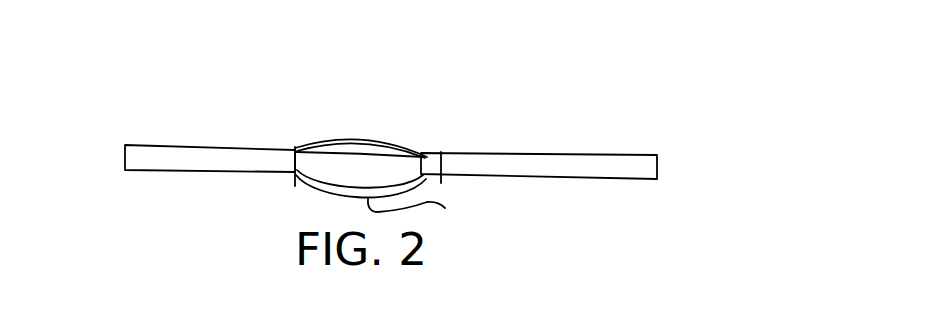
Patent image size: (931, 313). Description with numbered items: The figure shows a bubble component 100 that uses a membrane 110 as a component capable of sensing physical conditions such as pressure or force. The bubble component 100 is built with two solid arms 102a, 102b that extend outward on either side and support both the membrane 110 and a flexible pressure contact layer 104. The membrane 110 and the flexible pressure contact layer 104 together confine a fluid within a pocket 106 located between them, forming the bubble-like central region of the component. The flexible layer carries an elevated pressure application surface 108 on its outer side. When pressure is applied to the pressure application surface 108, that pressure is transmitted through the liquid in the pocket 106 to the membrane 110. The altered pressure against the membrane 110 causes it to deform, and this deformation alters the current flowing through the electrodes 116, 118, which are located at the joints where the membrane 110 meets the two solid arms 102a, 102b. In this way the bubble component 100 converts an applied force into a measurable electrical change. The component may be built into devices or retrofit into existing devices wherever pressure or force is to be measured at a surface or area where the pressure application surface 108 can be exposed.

The bubble component 100 is at (552, 224).
The solid arm 102a is at (637, 182).
The solid arm 102b is at (137, 172).
The flexible pressure contact layer 104 is at (294, 188).
The pocket 106 is at (340, 168).
The pressure application surface 108 is at (435, 215).
The membrane 110 is at (375, 135).
The electrode 116 is at (296, 147).
The electrode 118 is at (425, 154).